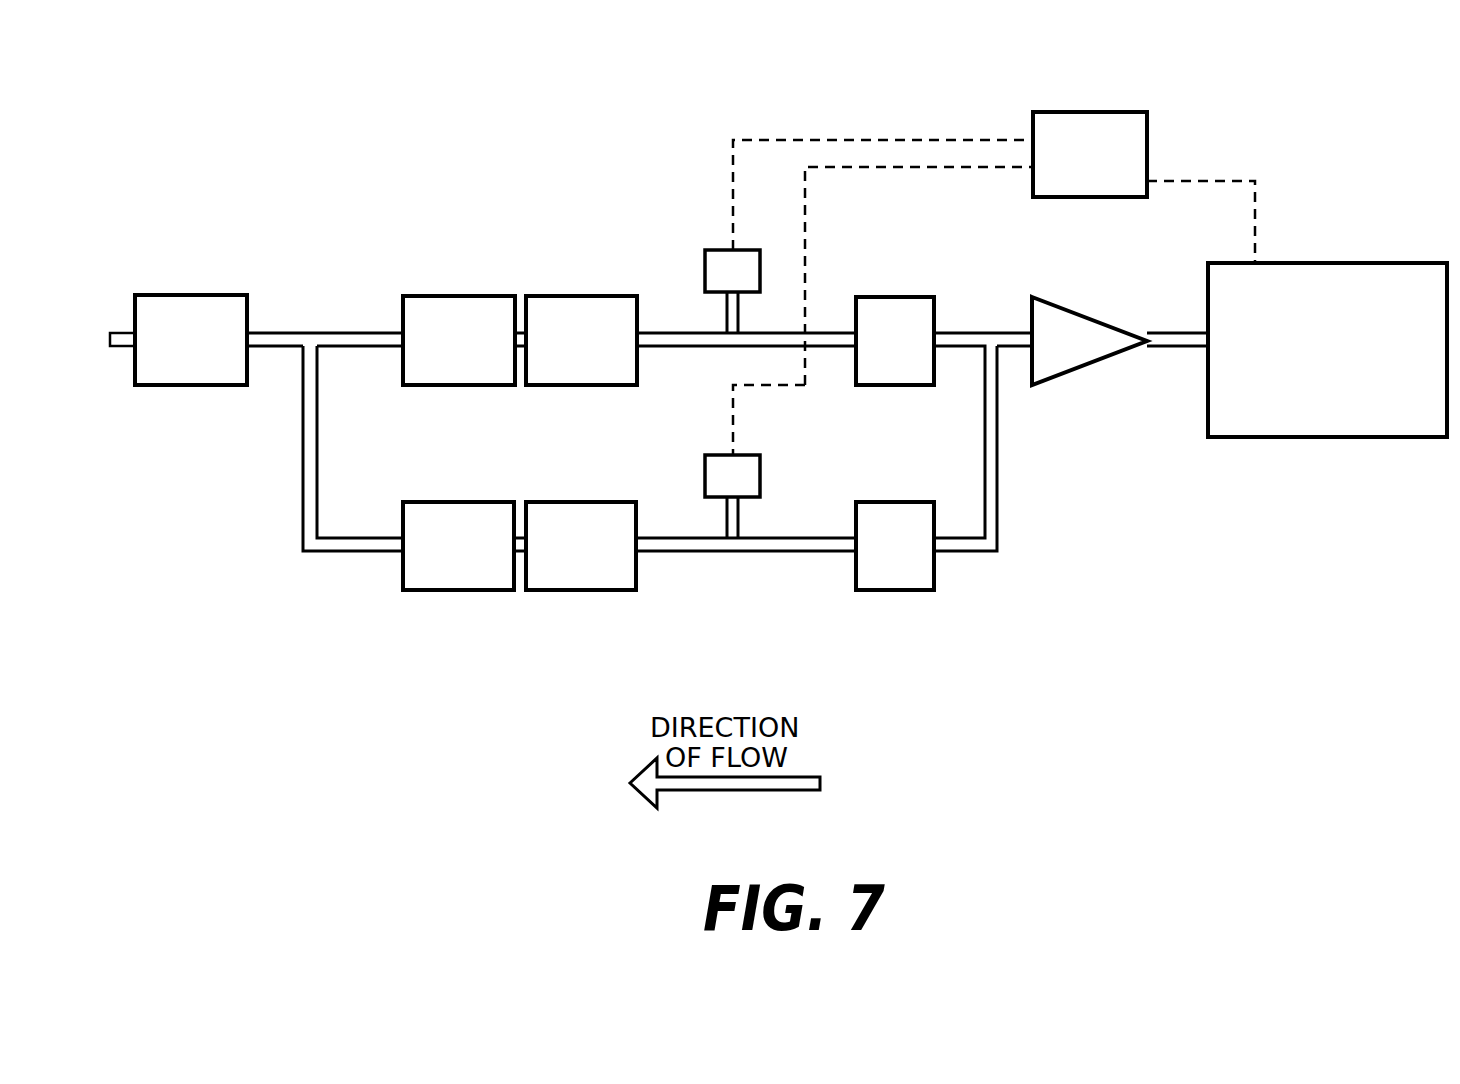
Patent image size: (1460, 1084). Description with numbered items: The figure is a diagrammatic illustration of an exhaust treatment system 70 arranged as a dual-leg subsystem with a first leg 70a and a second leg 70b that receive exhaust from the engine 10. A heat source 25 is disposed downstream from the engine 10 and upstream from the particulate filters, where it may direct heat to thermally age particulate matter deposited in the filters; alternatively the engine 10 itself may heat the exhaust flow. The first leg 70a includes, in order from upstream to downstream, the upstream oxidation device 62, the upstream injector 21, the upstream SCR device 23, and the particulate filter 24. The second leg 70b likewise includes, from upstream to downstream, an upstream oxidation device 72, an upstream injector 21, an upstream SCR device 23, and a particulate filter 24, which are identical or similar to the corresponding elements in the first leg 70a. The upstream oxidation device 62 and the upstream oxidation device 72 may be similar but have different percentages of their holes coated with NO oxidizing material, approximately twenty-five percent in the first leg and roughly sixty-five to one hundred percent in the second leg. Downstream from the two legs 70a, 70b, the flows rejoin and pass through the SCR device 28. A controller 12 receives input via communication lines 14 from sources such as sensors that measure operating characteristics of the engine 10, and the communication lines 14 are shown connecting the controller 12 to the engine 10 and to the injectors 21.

The engine 10 is at (1325, 263).
The controller 12 is at (1105, 112).
The communication lines 14 is at (730, 158).
The upstream injector 21 is at (745, 250).
The upstream SCR device 23 is at (560, 296).
The particulate filter 24 is at (440, 296).
The heat source 25 is at (1085, 314).
The SCR device 28 is at (181, 295).
The upstream oxidation device 62 is at (905, 297).
The upstream oxidation device 72 is at (903, 502).
The exhaust treatment system 70 is at (192, 146).
The first leg 70a is at (520, 186).
The second leg 70b is at (626, 661).